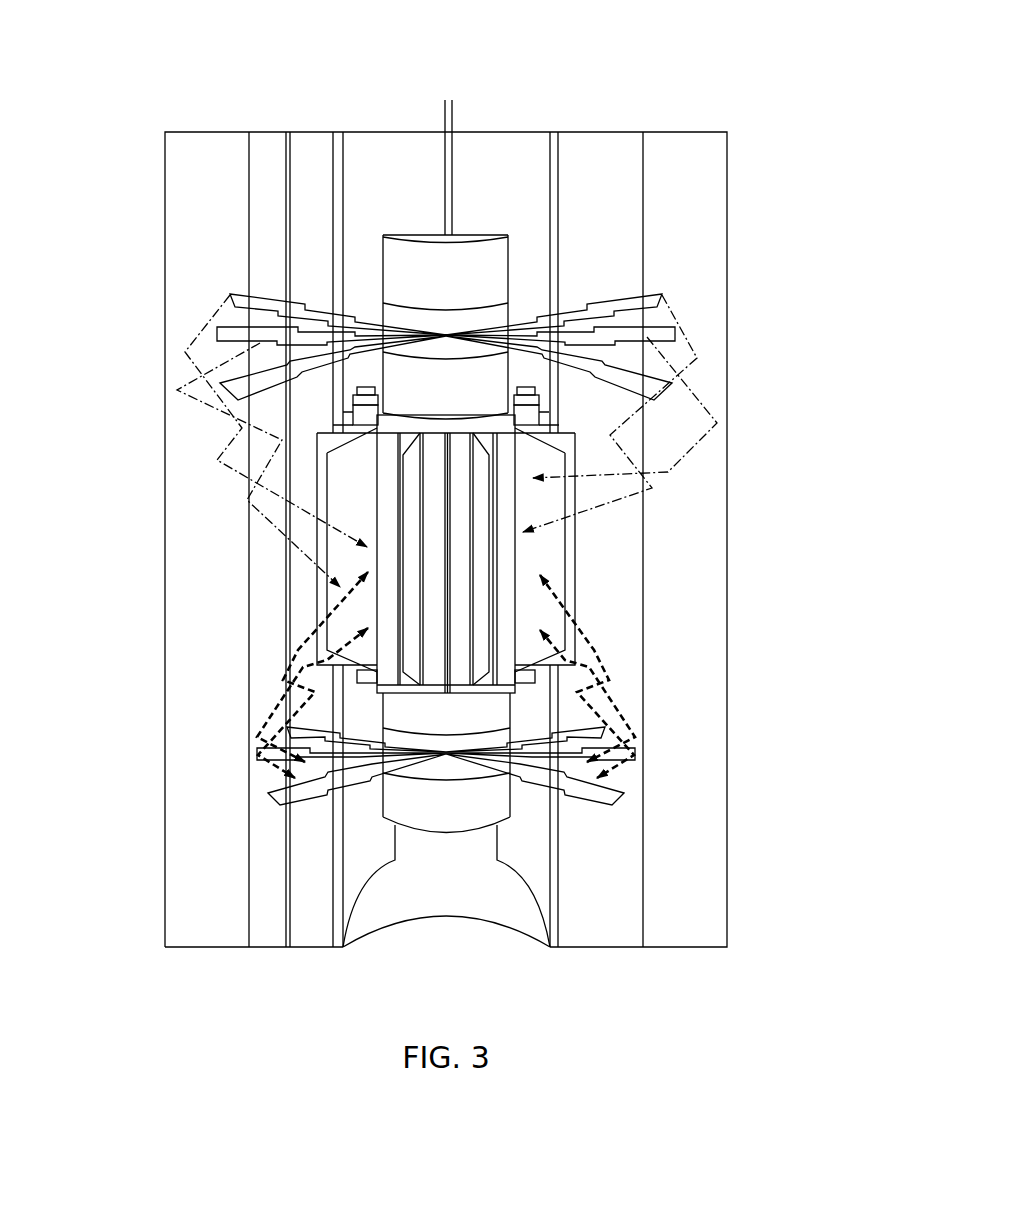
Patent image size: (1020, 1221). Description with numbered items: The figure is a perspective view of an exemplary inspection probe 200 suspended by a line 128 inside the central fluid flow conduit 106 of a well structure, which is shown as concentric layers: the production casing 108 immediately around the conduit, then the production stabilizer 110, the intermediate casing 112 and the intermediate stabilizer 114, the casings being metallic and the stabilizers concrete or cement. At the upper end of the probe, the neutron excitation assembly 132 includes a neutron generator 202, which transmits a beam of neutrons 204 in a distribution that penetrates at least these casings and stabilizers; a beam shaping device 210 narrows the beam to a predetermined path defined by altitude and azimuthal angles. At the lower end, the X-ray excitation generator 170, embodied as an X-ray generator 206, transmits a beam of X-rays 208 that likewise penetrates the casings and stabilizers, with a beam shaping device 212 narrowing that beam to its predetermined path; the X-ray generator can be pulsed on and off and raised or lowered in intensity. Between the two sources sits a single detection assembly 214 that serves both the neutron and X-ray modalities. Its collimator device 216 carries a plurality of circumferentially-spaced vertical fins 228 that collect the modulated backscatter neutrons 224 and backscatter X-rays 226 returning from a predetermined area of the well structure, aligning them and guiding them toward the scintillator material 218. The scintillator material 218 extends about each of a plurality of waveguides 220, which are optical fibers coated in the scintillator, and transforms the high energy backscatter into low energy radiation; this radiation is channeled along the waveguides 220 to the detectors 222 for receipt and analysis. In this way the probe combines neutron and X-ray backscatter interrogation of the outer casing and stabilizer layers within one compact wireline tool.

The inspection probe 200 is at (124, 337).
The intermediate stabilizer 114 is at (267, 147).
The production stabilizer 110 is at (308, 147).
The intermediate casing 112 is at (603, 140).
The production casing 108 is at (557, 140).
The fluid flow conduit 106 is at (386, 150).
The line 128 is at (453, 165).
The neutron generator 202 is at (508, 262).
The neutron excitation assembly 132 is at (378, 266).
The beam shaping device 210 is at (503, 302).
The beam of neutrons 204 is at (266, 296).
The detectors 222 is at (613, 428).
The backscatter neutrons 224 is at (668, 472).
The scintillator material 218 is at (383, 462).
The waveguides 220 is at (387, 520).
The vertical fins 228 is at (555, 535).
The detection assembly 214 is at (300, 597).
The collimator device 216 is at (536, 553).
The backscatter X-rays 226 is at (626, 730).
The beam of X-rays 208 is at (297, 822).
The X-ray generator 206 is at (437, 810).
The beam shaping device 212 is at (488, 735).
The excitation generator 170 is at (383, 823).